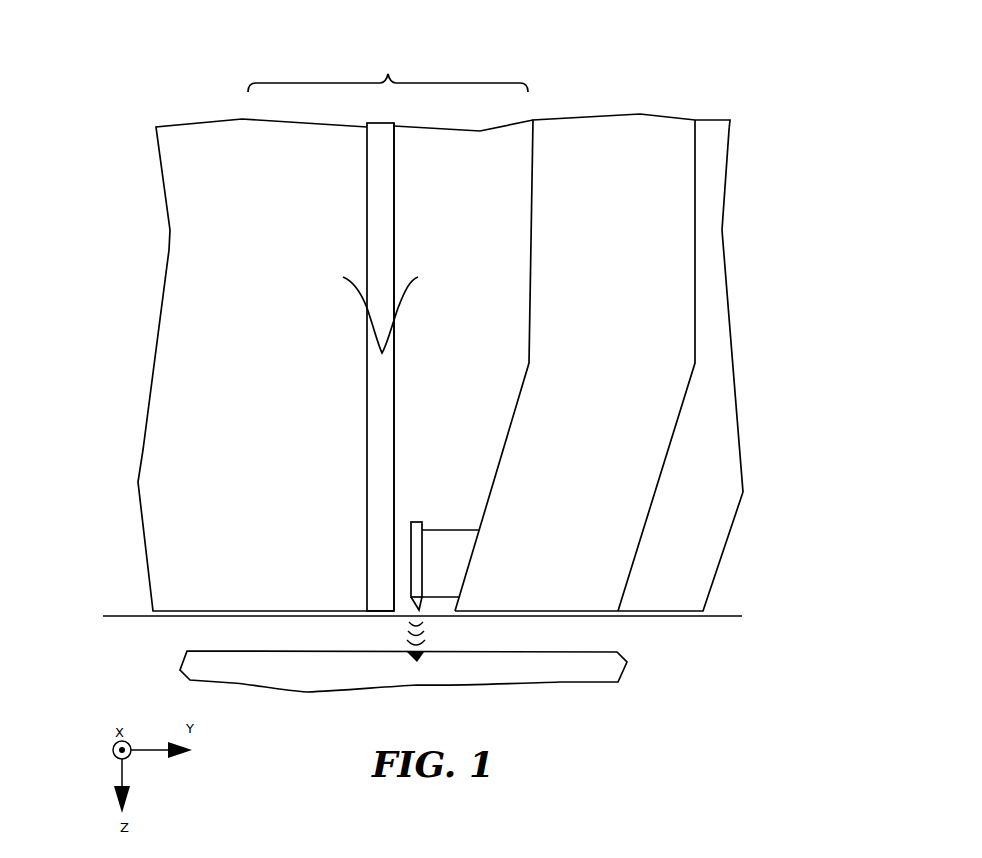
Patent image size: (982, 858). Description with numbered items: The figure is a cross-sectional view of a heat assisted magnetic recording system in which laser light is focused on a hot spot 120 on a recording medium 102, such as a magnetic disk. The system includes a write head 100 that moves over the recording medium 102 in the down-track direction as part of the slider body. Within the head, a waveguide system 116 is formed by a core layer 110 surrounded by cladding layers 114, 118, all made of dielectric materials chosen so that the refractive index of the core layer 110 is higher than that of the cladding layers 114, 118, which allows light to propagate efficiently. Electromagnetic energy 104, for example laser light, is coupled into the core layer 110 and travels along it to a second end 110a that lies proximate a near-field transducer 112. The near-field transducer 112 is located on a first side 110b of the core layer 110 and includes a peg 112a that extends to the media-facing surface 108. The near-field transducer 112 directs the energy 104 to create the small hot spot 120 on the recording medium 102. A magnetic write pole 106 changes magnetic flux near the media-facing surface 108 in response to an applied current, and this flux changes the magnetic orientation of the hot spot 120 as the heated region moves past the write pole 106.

The write head 100 is at (742, 80).
The recording medium 102 is at (228, 668).
The electromagnetic energy 104 is at (360, 287).
The magnetic write pole 106 is at (628, 114).
The media-facing surface 108 is at (660, 617).
The core layer 110 is at (388, 123).
The second end 110a is at (374, 600).
The first side 110b is at (396, 438).
The near-field transducer 112 is at (427, 597).
The peg 112a is at (413, 613).
The cladding layer 114 is at (265, 121).
The waveguide system 116 is at (388, 68).
The cladding layer 118 is at (427, 137).
The hot spot 120 is at (418, 662).